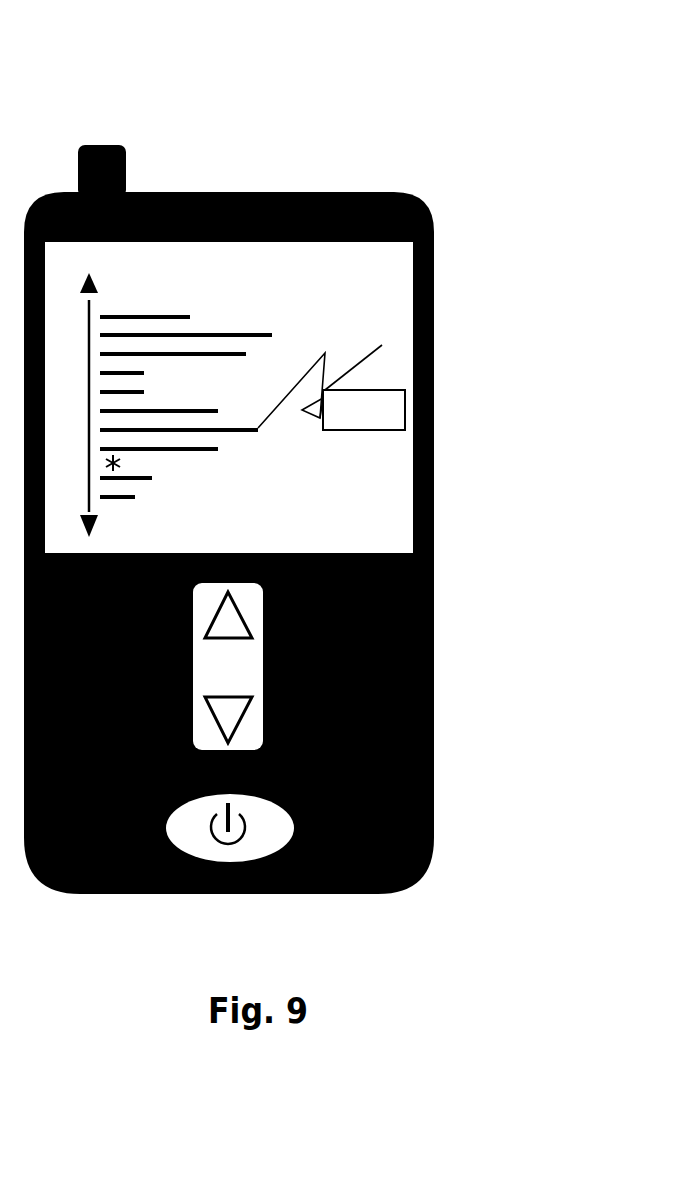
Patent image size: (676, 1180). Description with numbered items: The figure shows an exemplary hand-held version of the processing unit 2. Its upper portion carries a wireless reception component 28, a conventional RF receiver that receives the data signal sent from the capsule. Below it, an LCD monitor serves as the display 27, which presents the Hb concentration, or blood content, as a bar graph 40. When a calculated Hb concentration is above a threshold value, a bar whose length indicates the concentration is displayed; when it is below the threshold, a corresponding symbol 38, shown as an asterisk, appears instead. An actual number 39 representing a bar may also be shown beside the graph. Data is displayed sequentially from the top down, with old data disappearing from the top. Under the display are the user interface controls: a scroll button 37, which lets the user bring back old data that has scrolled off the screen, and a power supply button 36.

The processing unit 2 is at (280, 529).
The display 27 is at (300, 397).
The wireless reception component 28 is at (103, 145).
The power supply button 36 is at (283, 825).
The scroll button 37 is at (252, 677).
The symbol 38 is at (190, 468).
The actual number 39 is at (428, 387).
The bar graph 40 is at (264, 405).